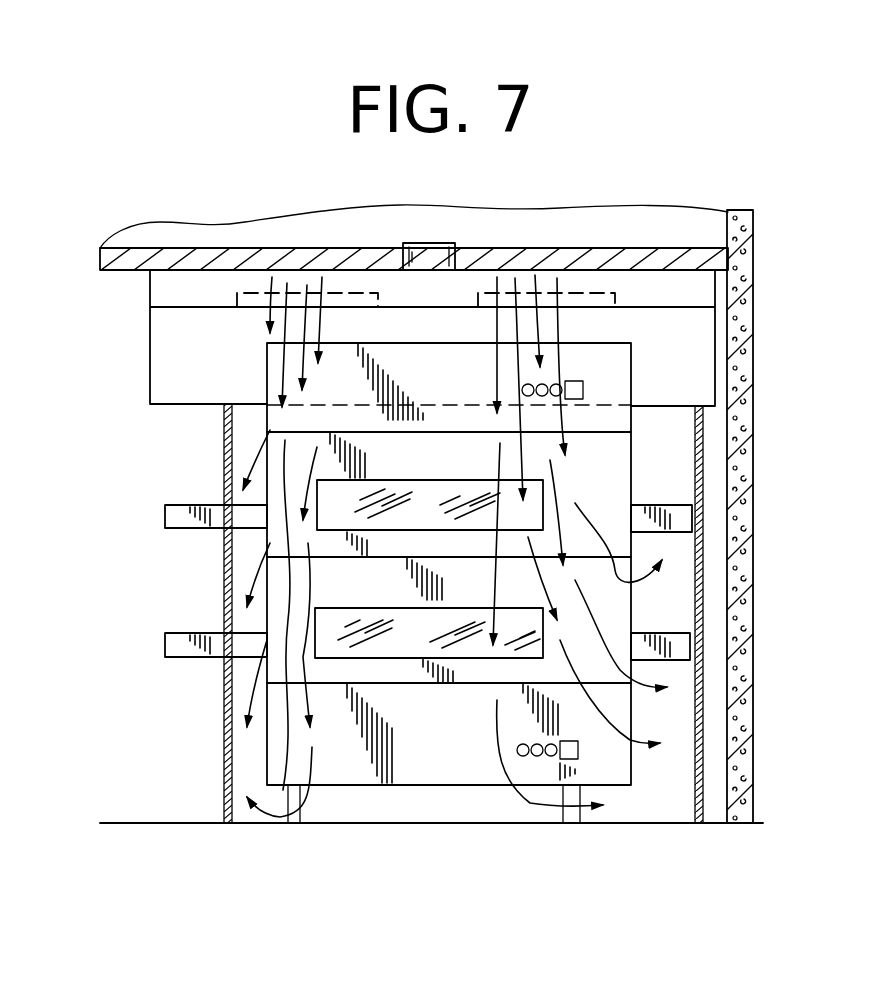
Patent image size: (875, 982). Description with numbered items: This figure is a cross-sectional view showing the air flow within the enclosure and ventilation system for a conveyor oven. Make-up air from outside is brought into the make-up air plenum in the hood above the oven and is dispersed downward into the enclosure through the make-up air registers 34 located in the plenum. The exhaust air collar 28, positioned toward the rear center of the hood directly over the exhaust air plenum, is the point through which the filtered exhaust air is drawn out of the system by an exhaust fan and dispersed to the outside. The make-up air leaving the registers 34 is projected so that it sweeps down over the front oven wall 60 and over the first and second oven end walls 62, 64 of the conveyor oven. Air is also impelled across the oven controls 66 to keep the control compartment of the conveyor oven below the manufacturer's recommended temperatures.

The exhaust air collar 28 is at (405, 242).
The make-up air register 34 is at (262, 297).
The front oven wall 60 is at (590, 460).
The first oven end wall 62 is at (632, 613).
The second oven end wall 64 is at (263, 618).
The oven controls 66 is at (537, 763).